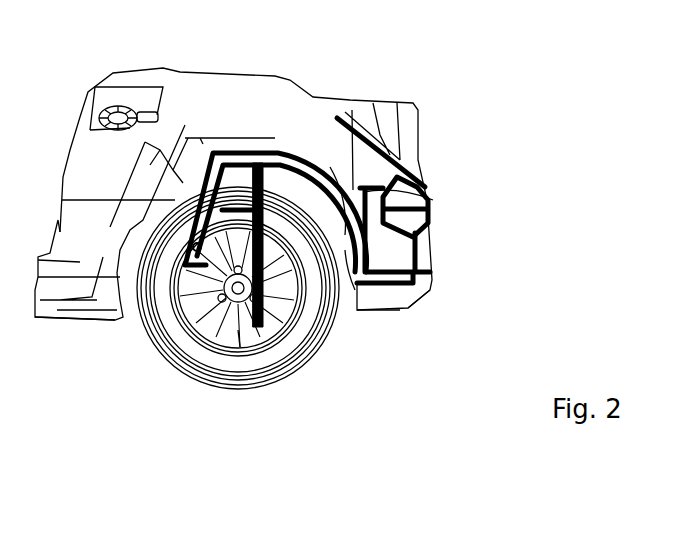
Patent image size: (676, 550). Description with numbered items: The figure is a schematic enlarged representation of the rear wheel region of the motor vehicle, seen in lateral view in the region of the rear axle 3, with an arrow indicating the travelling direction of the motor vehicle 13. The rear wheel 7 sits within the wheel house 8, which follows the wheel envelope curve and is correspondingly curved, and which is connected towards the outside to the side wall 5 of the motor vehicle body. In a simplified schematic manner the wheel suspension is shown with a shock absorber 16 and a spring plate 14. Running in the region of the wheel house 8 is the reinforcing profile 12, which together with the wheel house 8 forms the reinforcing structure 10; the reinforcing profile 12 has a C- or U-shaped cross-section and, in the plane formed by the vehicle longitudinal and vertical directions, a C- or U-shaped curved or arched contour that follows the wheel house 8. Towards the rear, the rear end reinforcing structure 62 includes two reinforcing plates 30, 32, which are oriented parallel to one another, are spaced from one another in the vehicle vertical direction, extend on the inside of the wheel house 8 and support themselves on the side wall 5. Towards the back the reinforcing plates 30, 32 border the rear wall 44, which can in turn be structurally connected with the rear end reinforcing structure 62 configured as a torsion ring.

The rear axle 3 is at (200, 417).
The side wall 5 is at (222, 102).
The rear wheel 7 is at (237, 373).
The wheel house 8 is at (128, 312).
The reinforcing structure 10 is at (307, 142).
The reinforcing profile 12 is at (280, 145).
The travelling direction of the motor vehicle 13 is at (418, 452).
The spring plate 14 is at (180, 335).
The shock absorber 16 is at (290, 318).
The reinforcing plate 30 is at (408, 310).
The reinforcing plate 32 is at (392, 312).
The rear wall 44 is at (431, 253).
The rear end reinforcing structure 62 is at (440, 207).